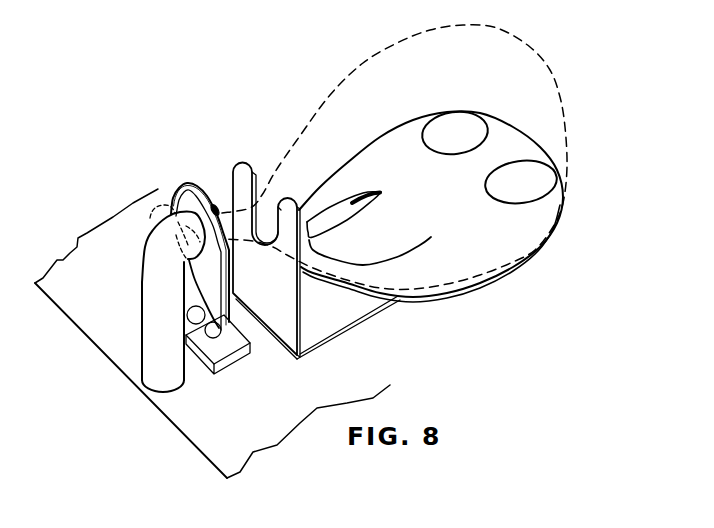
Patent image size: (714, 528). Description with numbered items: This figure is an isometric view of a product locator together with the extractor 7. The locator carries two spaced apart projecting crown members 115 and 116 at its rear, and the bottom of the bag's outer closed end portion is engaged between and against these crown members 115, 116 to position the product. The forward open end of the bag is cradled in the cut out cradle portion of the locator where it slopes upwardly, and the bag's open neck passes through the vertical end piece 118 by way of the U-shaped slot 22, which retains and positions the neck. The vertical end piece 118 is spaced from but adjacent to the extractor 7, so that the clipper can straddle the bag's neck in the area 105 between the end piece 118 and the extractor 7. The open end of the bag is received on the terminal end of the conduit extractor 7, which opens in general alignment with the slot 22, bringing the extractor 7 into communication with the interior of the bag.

The extractor 7 is at (148, 264).
The U-shaped slot 22 is at (394, 157).
The area 105 is at (266, 261).
The crown member 115 is at (470, 127).
The crown member 116 is at (528, 176).
The vertical end piece 118 is at (303, 347).